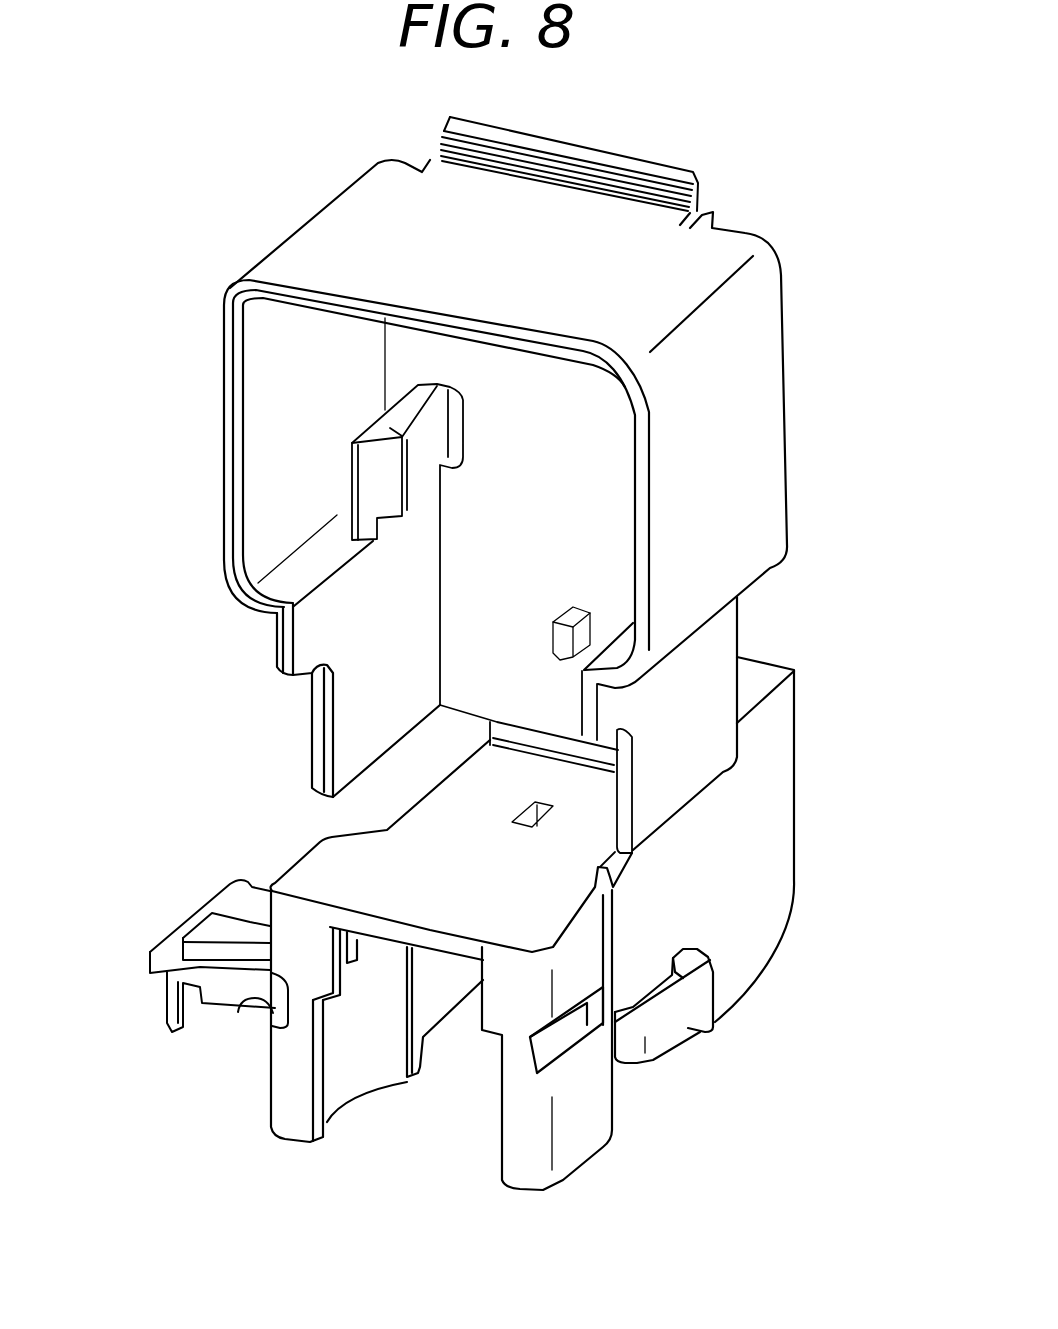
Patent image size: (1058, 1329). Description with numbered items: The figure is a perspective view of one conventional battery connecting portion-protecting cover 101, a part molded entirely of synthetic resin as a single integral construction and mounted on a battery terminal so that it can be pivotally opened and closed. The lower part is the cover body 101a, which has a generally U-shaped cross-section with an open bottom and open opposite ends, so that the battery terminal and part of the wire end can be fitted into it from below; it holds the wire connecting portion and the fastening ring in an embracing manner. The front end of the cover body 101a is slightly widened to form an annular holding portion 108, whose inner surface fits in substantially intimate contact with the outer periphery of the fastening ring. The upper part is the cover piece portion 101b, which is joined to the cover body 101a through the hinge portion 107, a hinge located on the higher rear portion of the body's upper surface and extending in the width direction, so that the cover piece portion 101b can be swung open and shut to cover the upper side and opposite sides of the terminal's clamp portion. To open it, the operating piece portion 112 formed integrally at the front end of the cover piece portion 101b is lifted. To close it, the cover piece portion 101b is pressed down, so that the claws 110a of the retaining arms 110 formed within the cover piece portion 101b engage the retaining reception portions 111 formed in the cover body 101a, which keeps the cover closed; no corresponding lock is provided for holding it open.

The protecting cover 101 is at (183, 682).
The cover body 101a is at (773, 857).
The cover piece portion 101b is at (765, 357).
The hinge portion 107 is at (497, 728).
The annular holding portion 108 is at (347, 1067).
The retaining arm 110 is at (417, 420).
The claw 110a is at (373, 463).
The retaining reception portion 111 is at (238, 1010).
The operating piece portion 112 is at (620, 152).